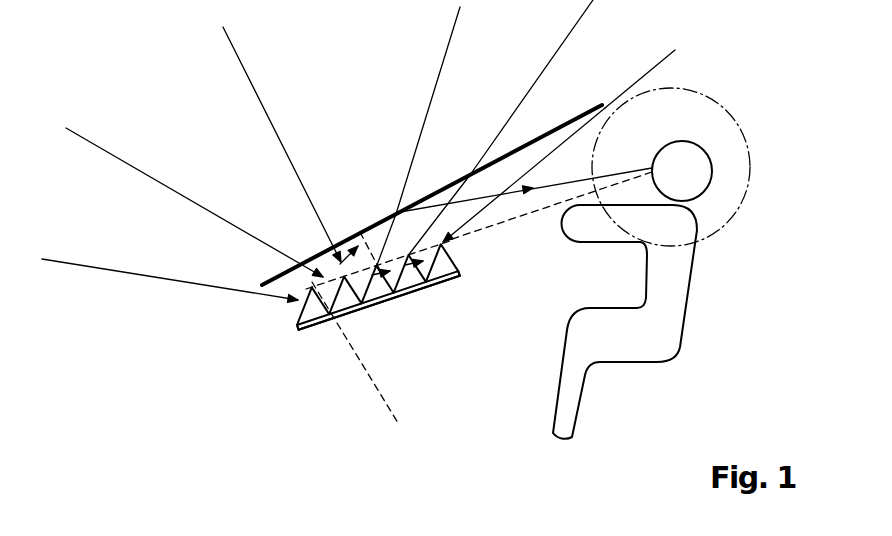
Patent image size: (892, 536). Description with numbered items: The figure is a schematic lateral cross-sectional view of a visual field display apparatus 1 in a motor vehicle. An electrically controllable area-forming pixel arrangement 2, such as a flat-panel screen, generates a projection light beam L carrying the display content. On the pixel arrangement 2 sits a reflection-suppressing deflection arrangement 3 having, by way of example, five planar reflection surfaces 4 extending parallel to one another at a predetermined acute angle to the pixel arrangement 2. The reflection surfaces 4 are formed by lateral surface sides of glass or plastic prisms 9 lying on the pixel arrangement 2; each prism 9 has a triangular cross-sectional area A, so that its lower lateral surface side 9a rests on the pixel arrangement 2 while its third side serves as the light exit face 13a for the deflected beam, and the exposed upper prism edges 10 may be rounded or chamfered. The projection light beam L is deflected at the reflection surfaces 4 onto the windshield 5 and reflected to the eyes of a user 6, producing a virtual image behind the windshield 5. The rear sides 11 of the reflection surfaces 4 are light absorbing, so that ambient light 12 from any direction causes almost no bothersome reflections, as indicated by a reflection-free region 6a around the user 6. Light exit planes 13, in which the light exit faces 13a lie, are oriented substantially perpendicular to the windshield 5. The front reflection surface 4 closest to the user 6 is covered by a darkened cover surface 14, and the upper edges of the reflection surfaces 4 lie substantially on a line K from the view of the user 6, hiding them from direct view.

The visual field display apparatus 1 is at (377, 249).
The area-forming pixel arrangement 2 is at (398, 297).
The reflection-suppressing deflection arrangement 3 is at (380, 318).
The reflection surfaces 4 is at (348, 303).
The windshield 5 is at (454, 183).
The user 6 is at (682, 141).
The region free from bothersome reflections 6a is at (727, 107).
The prisms 9 is at (444, 281).
The lower lateral surface side 9a is at (300, 331).
The upper prism edges 10 is at (450, 237).
The rear sides 11 is at (428, 214).
The ambient light 12 is at (128, 167).
The light exit planes 13 is at (378, 388).
The light exit face 13a is at (366, 233).
The cover surface 14 is at (456, 253).
The triangular cross-sectional area A is at (416, 292).
The line K is at (534, 209).
The projection light beam L is at (352, 243).